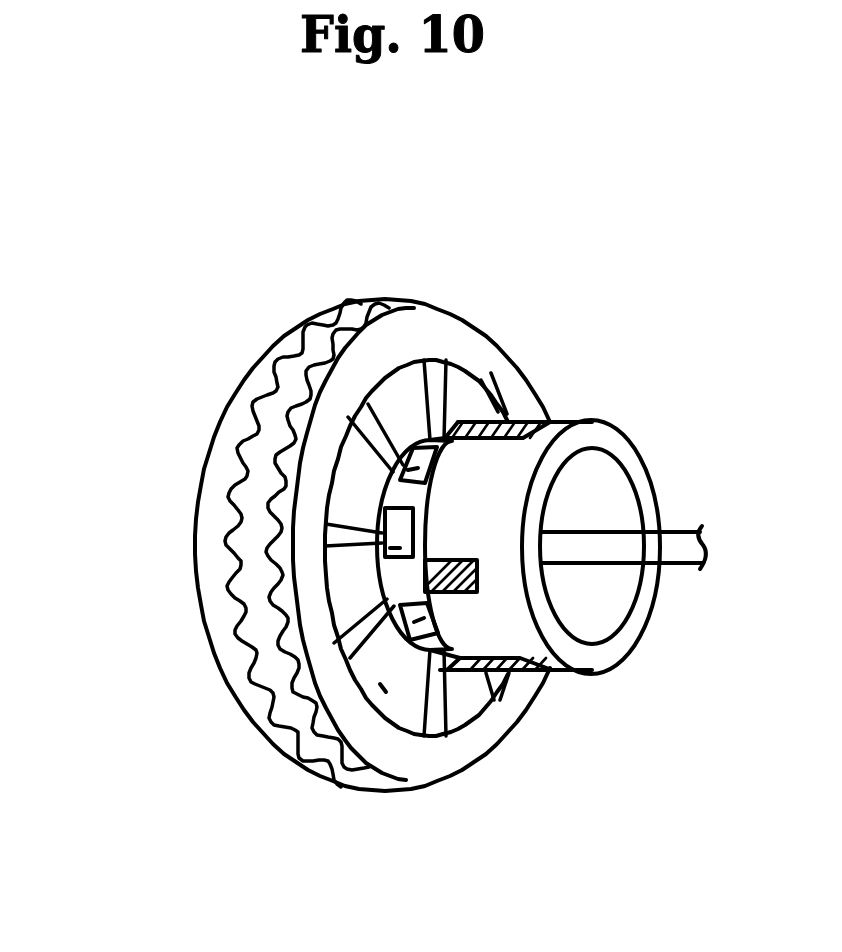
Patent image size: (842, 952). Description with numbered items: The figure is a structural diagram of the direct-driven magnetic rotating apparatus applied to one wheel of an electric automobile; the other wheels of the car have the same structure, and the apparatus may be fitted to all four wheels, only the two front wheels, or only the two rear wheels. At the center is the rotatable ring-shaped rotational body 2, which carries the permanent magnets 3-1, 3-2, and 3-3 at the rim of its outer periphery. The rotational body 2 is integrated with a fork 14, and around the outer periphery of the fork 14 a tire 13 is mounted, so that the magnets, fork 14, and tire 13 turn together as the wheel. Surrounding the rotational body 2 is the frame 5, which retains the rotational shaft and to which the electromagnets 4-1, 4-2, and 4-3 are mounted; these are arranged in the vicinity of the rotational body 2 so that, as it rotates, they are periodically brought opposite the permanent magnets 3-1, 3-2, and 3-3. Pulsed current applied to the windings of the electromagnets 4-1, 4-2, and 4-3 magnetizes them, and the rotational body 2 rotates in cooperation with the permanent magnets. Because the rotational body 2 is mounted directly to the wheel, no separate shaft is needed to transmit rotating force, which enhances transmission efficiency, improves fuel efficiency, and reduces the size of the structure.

The tire 13 is at (350, 298).
The fork 14 is at (433, 394).
The electromagnet 4-1 is at (548, 418).
The electromagnet 4-2 is at (483, 508).
The electromagnet 4-3 is at (540, 670).
The frame 5 is at (635, 460).
The permanent magnet 3-1 is at (398, 463).
The permanent magnet 3-2 is at (397, 546).
The permanent magnet 3-3 is at (383, 688).
The rotational body 2 is at (393, 490).